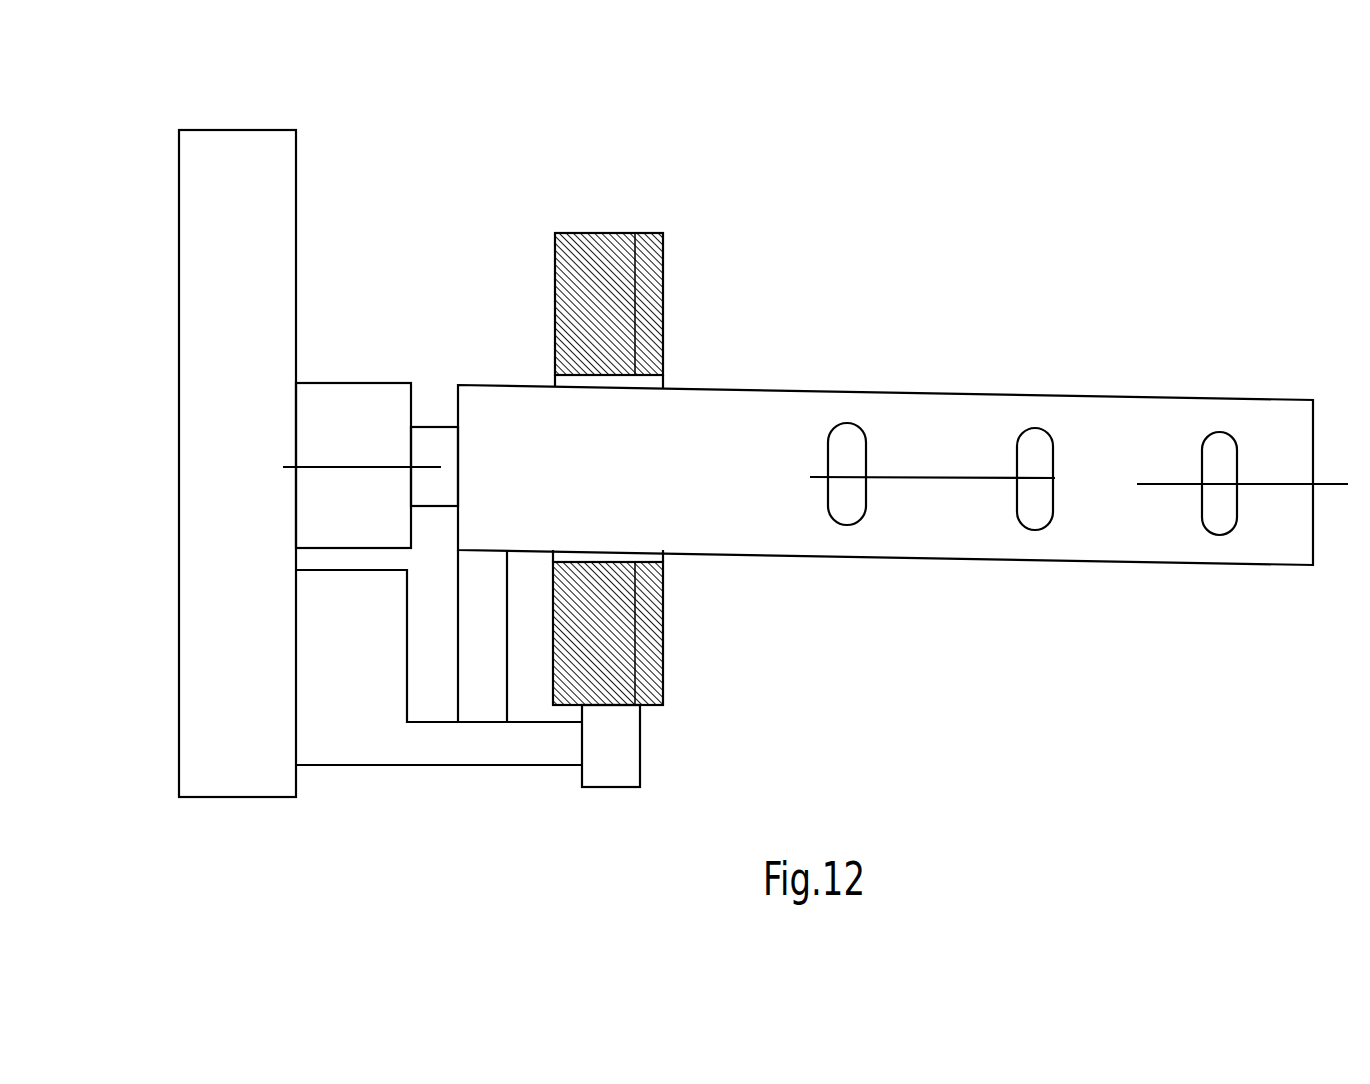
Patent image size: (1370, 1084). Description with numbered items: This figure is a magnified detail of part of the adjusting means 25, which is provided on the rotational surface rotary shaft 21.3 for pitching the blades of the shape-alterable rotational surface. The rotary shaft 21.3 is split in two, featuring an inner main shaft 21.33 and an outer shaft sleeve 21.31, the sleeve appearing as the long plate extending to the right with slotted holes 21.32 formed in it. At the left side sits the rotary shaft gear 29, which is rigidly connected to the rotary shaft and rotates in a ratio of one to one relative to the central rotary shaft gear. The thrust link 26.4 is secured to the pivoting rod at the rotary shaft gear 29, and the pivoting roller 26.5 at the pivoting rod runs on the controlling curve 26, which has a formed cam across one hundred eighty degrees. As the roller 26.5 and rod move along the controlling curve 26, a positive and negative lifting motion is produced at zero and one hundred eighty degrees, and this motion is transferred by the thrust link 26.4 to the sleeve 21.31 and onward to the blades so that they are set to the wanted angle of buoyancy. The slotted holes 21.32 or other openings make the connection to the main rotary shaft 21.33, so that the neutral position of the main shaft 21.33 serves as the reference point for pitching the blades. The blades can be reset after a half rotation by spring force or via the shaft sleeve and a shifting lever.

The rotary shaft gear 29 is at (265, 160).
The adjusting means 25 is at (555, 310).
The controlling curve 26 is at (655, 238).
The rotational surface rotary shaft 21.3 is at (1090, 435).
The outer shaft sleeve 21.31 is at (778, 403).
The slotted holes 21.32 is at (853, 507).
The inner main shaft 21.33 is at (430, 448).
The thrust link 26.4 is at (475, 683).
The pivoting roller 26.5 is at (607, 752).